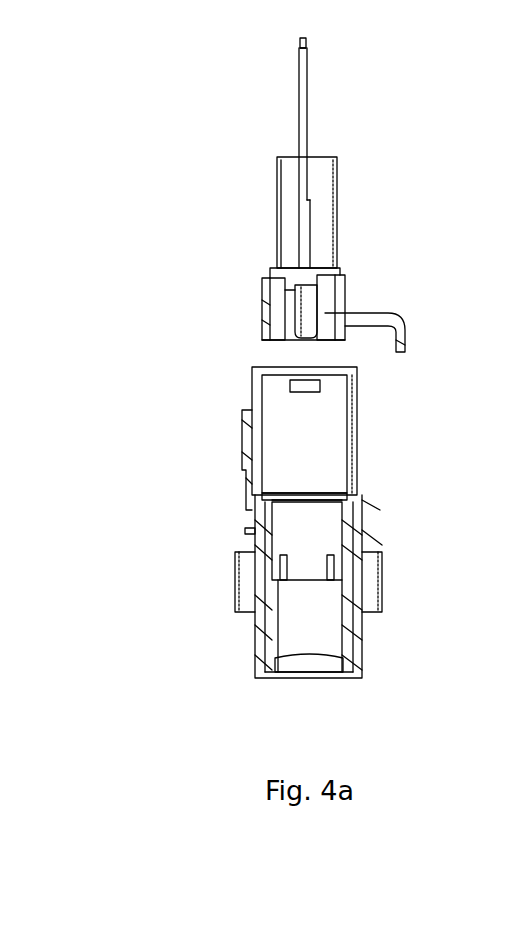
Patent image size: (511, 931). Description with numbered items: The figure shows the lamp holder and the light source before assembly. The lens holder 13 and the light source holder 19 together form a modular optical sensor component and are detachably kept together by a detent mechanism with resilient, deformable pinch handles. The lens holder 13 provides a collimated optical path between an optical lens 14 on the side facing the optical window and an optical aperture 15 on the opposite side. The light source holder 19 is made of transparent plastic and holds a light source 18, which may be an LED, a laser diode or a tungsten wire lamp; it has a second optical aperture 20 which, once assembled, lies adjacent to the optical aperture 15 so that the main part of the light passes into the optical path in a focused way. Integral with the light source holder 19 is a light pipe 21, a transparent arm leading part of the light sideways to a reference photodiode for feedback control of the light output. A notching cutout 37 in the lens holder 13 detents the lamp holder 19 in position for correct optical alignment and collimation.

The lens holder 13 is at (224, 479).
The optical lens 14 is at (310, 660).
The optical aperture 15 is at (307, 493).
The light source 18 is at (303, 301).
The light source holder 19 is at (256, 219).
The second optical aperture 20 is at (292, 340).
The light pipe 21 is at (370, 320).
The notching cutout 37 is at (298, 387).